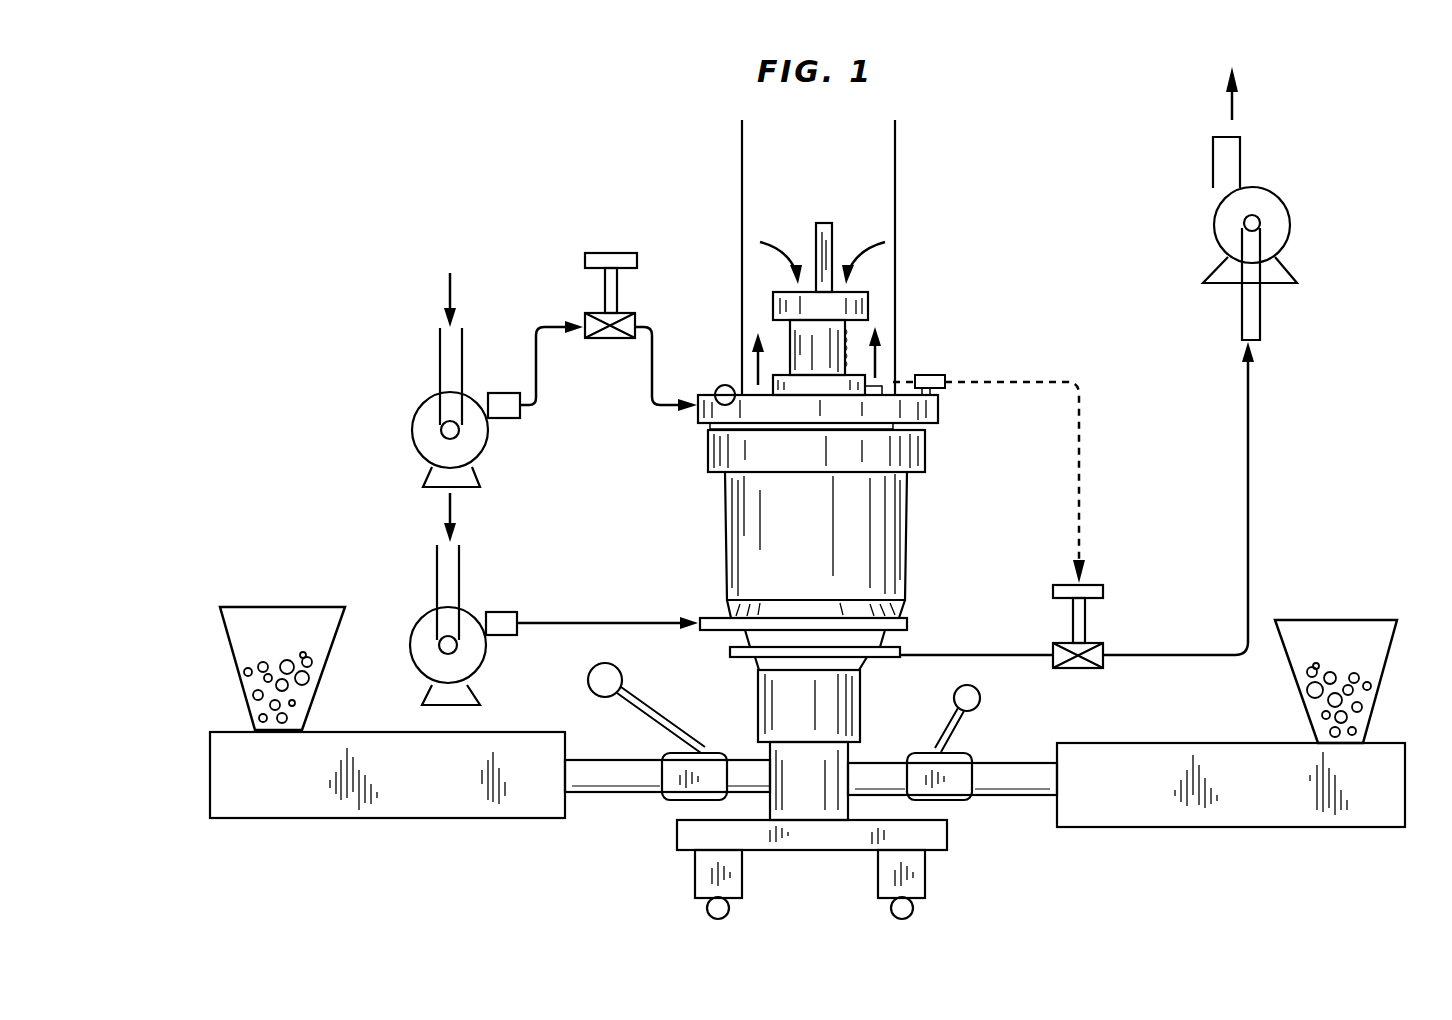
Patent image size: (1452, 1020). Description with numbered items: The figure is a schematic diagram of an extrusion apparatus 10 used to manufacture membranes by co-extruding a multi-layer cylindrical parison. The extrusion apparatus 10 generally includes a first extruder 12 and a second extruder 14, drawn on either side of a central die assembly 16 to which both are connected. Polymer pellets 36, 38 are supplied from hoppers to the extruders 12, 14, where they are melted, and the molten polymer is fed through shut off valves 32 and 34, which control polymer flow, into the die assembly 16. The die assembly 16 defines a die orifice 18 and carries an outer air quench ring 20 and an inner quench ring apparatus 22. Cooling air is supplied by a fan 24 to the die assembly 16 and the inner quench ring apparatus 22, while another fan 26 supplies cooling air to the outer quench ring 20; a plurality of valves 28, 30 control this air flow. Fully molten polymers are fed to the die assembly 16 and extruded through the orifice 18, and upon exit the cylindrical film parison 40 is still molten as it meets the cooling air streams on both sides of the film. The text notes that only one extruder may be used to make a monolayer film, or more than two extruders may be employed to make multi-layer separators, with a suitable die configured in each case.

The extrusion apparatus 10 is at (462, 118).
The first extruder 12 is at (367, 818).
The second extruder 14 is at (1143, 827).
The die assembly 16 is at (725, 512).
The die orifice 18 is at (712, 436).
The outer air quench ring 20 is at (942, 418).
The inner quench ring apparatus 22 is at (790, 348).
The fan 24 is at (410, 635).
The fan 26 is at (412, 425).
The valve 28 is at (1077, 668).
The valve 30 is at (583, 318).
The shut off valve 32 is at (665, 797).
The shut off valve 34 is at (962, 800).
The polymer pellets 36 is at (1392, 648).
The polymer pellets 38 is at (225, 633).
The cylindrical film parison 40 is at (742, 190).